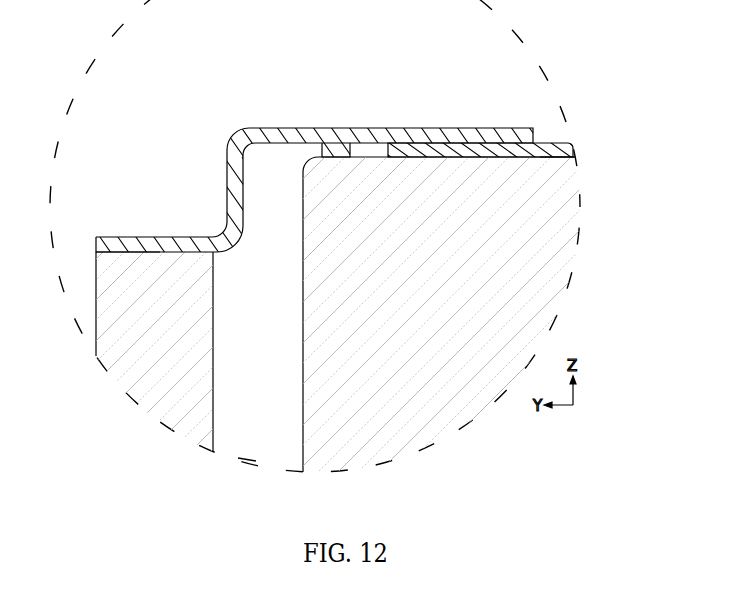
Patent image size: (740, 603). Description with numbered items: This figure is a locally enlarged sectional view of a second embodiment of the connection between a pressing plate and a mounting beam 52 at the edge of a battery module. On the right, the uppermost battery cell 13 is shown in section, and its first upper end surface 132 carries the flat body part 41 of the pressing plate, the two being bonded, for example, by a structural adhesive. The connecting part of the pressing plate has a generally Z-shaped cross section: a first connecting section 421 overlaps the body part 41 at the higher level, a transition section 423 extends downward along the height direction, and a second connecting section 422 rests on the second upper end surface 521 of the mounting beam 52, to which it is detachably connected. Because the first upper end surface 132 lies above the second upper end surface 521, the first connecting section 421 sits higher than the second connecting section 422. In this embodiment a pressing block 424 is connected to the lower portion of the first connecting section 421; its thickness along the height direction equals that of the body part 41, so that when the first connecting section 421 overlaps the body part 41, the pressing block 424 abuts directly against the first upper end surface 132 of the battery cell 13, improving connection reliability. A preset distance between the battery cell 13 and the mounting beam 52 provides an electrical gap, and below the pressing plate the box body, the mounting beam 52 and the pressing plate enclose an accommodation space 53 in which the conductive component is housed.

The battery cell 13 is at (552, 300).
The first upper end surface 132 is at (565, 160).
The body part 41 is at (555, 147).
The first connecting section 421 is at (460, 134).
The second connecting section 422 is at (160, 238).
The transition section 423 is at (235, 182).
The pressing block 424 is at (338, 150).
The mounting beam 52 is at (118, 370).
The second upper end surface 521 is at (96, 250).
The accommodation space 53 is at (253, 455).